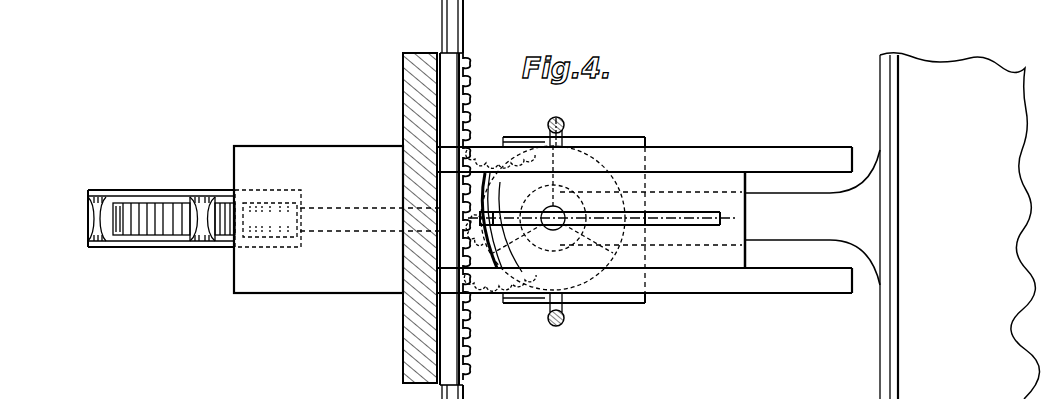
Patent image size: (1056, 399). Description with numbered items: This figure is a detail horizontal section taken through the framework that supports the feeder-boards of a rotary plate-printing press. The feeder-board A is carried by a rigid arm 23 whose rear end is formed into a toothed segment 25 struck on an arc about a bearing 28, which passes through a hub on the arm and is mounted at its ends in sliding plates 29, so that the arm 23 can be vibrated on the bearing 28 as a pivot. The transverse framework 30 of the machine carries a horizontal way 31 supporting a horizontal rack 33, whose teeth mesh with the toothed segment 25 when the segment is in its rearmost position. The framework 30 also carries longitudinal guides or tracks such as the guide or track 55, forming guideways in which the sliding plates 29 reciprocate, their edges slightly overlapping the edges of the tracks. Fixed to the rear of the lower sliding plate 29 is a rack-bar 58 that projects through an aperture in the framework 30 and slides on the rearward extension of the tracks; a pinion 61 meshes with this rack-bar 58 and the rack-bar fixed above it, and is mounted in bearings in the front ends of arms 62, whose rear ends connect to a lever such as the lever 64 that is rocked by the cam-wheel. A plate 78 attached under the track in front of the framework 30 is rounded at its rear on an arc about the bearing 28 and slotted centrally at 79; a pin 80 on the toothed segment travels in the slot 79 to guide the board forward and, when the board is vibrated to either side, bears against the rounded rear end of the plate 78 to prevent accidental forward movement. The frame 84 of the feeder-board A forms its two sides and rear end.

The arm 23 is at (812, 217).
The toothed segment 25 is at (482, 176).
The bearing 28 is at (556, 216).
The sliding plate 29 is at (636, 140).
The transverse framework 30 is at (404, 104).
The horizontal way 31 is at (452, 101).
The horizontal rack 33 is at (464, 384).
The guide or track 55 is at (543, 219).
The rack-bar 58 is at (160, 210).
The pinion 61 is at (285, 204).
The arm 62 is at (143, 186).
The lever 64 is at (88, 236).
The plate 78 is at (605, 229).
The slot 79 is at (684, 213).
The pin 80 is at (506, 222).
The frame 84 is at (894, 118).
The feeder-board A is at (928, 218).